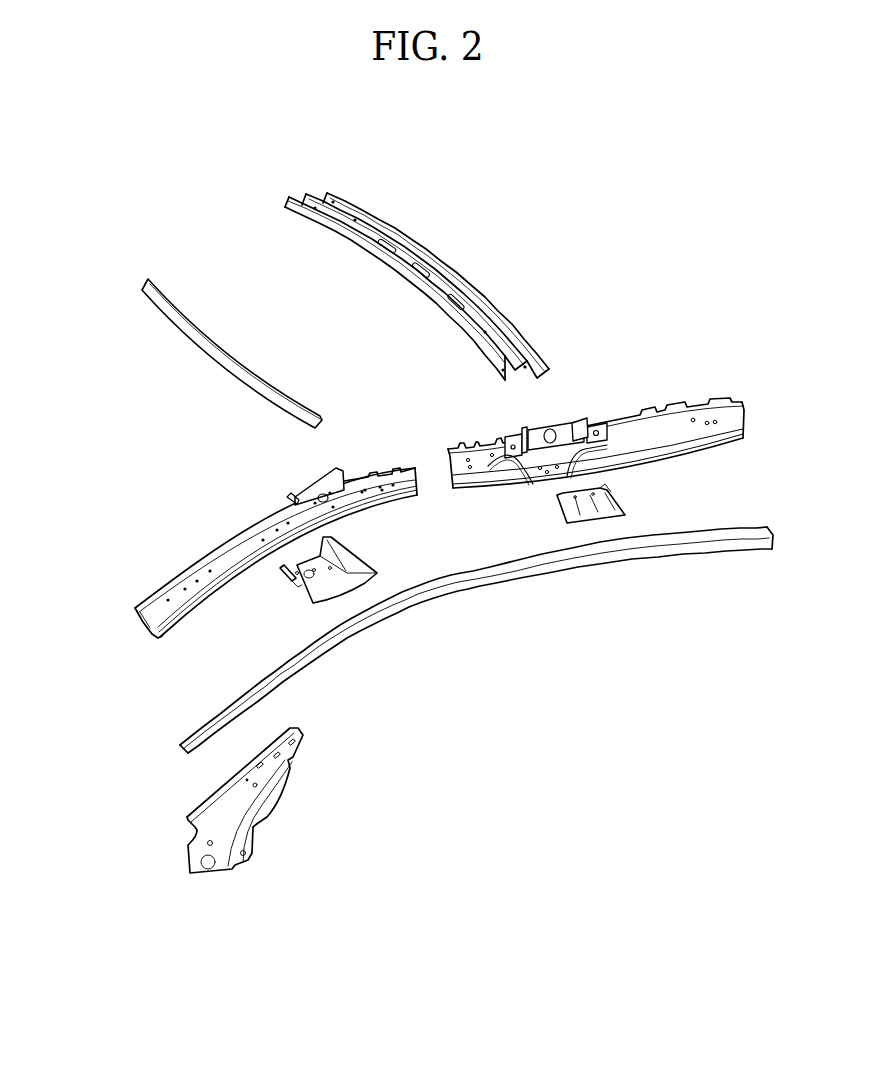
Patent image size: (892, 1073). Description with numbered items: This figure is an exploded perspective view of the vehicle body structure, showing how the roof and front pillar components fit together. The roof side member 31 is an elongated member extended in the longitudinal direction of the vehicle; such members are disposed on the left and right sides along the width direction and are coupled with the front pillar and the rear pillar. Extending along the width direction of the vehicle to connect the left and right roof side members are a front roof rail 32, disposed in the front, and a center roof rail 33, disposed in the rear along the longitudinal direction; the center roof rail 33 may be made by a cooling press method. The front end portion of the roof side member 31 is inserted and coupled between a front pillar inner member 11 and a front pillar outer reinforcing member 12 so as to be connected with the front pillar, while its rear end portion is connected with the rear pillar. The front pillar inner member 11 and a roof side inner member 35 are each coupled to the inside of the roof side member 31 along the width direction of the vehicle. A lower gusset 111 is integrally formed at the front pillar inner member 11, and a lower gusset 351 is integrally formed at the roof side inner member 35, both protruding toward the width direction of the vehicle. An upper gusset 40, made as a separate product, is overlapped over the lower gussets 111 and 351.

The front pillar inner member 11 is at (257, 533).
The lower gusset 111 is at (342, 476).
The front pillar outer reinforcing member 12 is at (265, 797).
The roof side member 31 is at (487, 578).
The front roof rail 32 is at (147, 278).
The center roof rail 33 is at (347, 198).
The roof side inner member 35 is at (596, 419).
The lower gusset 351 is at (577, 422).
The upper gusset 40 is at (290, 578).